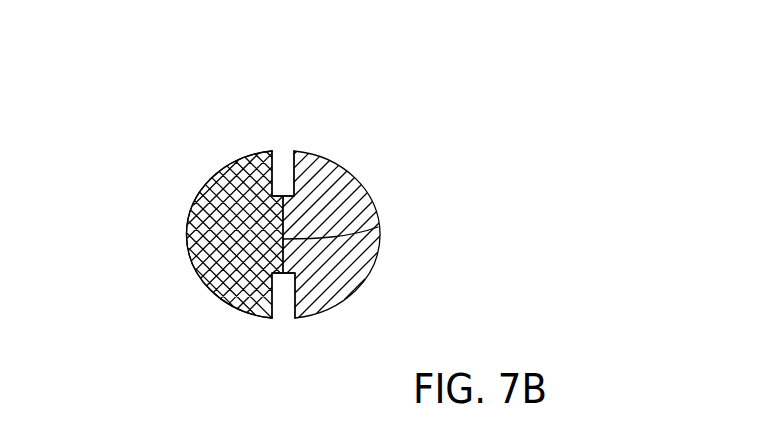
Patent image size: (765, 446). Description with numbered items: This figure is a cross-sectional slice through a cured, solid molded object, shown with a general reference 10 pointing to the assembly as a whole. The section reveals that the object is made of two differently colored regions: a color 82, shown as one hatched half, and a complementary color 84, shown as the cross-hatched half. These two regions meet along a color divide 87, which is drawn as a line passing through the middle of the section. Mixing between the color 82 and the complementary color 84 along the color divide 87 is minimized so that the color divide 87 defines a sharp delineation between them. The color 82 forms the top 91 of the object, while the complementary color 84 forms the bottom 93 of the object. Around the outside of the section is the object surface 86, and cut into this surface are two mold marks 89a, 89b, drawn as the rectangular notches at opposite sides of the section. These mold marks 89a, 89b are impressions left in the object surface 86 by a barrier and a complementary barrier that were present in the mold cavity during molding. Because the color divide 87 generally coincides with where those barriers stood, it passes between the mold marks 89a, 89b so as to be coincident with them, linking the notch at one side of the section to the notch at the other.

The catheter assembly 10 is at (498, 112).
The color 82 is at (360, 193).
The complementary color 84 is at (215, 257).
The object surface 86 is at (237, 159).
The color divide 87 is at (378, 227).
The mold mark 89a is at (284, 168).
The mold mark 89b is at (286, 307).
The top 91 is at (378, 262).
The bottom 93 is at (193, 200).